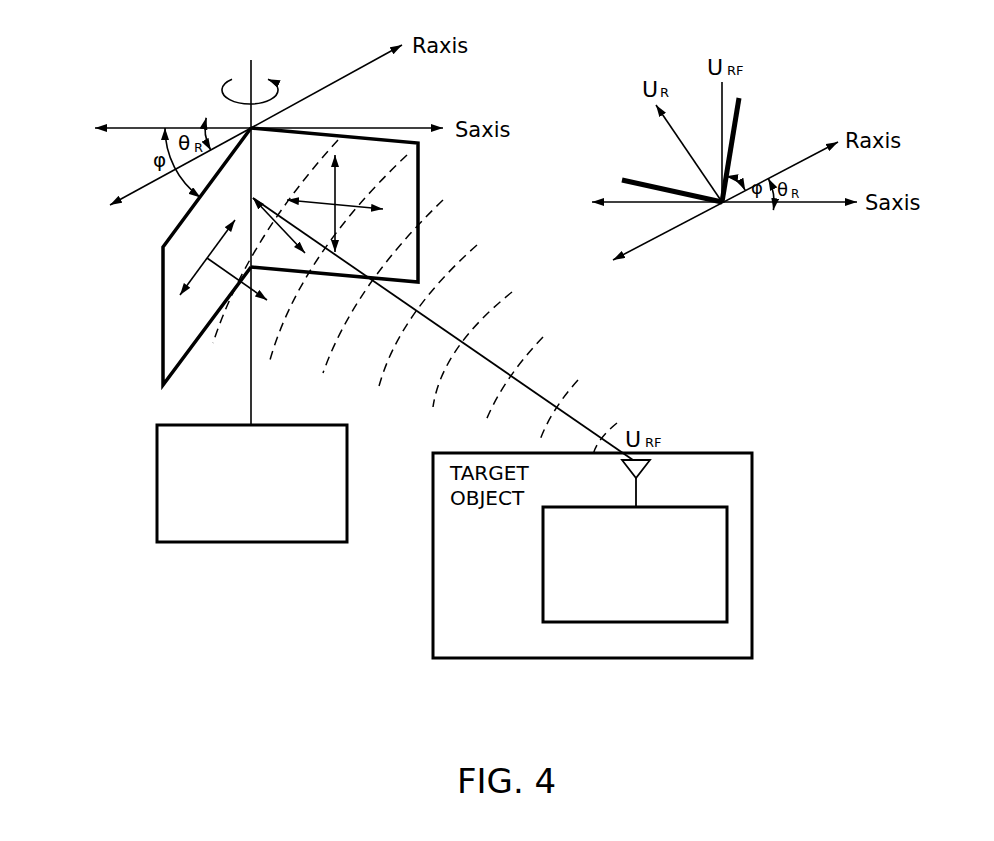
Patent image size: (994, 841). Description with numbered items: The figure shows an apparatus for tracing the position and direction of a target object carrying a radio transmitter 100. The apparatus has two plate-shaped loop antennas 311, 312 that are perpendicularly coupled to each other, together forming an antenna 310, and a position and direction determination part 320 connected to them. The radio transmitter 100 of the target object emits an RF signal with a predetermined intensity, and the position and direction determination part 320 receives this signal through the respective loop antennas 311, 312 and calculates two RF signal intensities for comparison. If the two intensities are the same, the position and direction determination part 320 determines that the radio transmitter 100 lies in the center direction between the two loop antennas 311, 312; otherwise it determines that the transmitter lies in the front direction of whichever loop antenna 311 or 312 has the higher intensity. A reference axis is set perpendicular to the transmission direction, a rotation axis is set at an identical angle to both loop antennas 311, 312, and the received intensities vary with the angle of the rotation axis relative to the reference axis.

The radio transmitter 100 is at (543, 590).
The antenna 310 is at (427, 225).
The first loop antenna 311 is at (163, 315).
The second loop antenna 312 is at (418, 187).
The position and direction determination part 320 is at (255, 542).